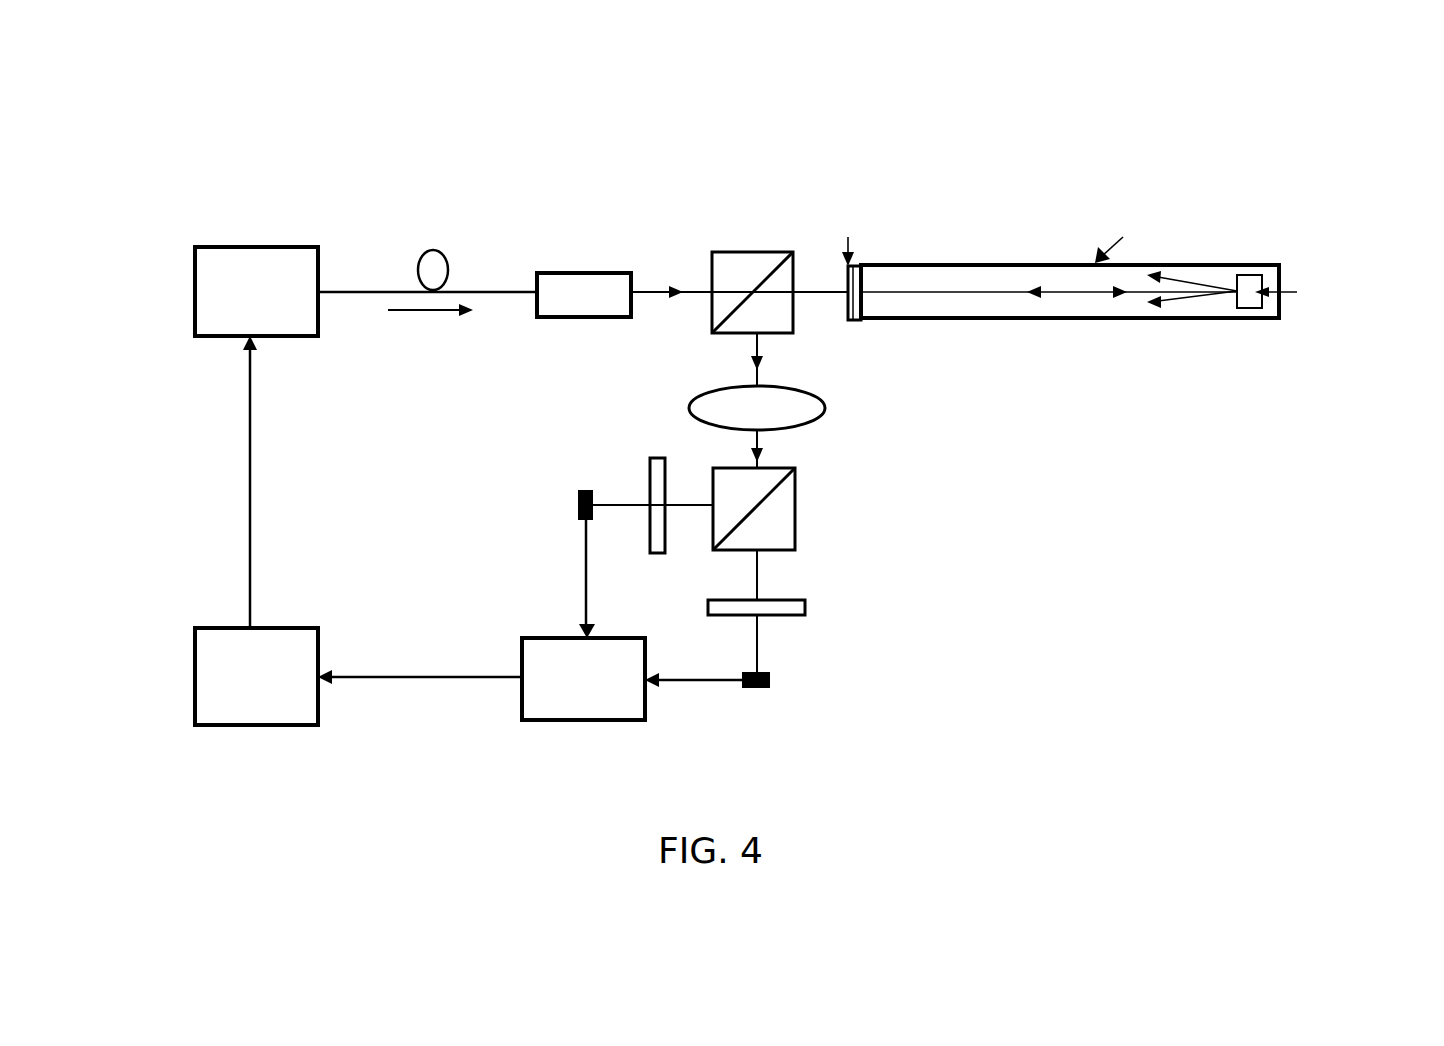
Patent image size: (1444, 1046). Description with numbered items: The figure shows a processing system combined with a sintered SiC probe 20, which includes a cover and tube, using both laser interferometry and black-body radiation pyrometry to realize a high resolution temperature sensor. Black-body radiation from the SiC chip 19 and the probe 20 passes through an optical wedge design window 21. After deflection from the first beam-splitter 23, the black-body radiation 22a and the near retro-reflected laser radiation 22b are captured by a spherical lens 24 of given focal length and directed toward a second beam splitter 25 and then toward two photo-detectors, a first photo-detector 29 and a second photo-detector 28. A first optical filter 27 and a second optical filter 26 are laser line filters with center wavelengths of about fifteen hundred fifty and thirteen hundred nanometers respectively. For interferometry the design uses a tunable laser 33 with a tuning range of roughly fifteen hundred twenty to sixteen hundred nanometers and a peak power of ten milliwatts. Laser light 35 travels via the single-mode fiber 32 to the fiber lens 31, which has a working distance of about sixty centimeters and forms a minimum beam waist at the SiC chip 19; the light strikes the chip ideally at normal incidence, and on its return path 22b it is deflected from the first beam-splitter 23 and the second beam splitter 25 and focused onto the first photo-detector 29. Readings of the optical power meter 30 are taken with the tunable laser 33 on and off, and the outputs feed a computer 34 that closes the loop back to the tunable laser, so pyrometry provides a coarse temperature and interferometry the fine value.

The SiC chip 19 is at (1253, 300).
The sintered SiC probe 20 is at (945, 266).
The optical wedge design window 21 is at (847, 310).
The BB radiation 22a is at (1168, 302).
The near retro-reflected laser radiation 22b is at (1082, 294).
The beam-splitter BS1 23 is at (758, 265).
The spherical lens S 24 is at (790, 410).
The beam splitter BS2 25 is at (775, 522).
The optical filter F2 26 is at (660, 472).
The optical filter F1 27 is at (795, 598).
The photo-detector PD2 28 is at (585, 490).
The photo-detector PD1 29 is at (770, 680).
The optical power meter PM 30 is at (548, 698).
The fiber lens FL 31 is at (617, 272).
The SMF 32 is at (480, 290).
The tunable laser TL 33 is at (225, 265).
The computer PC 34 is at (263, 708).
The laser light 35 is at (658, 290).